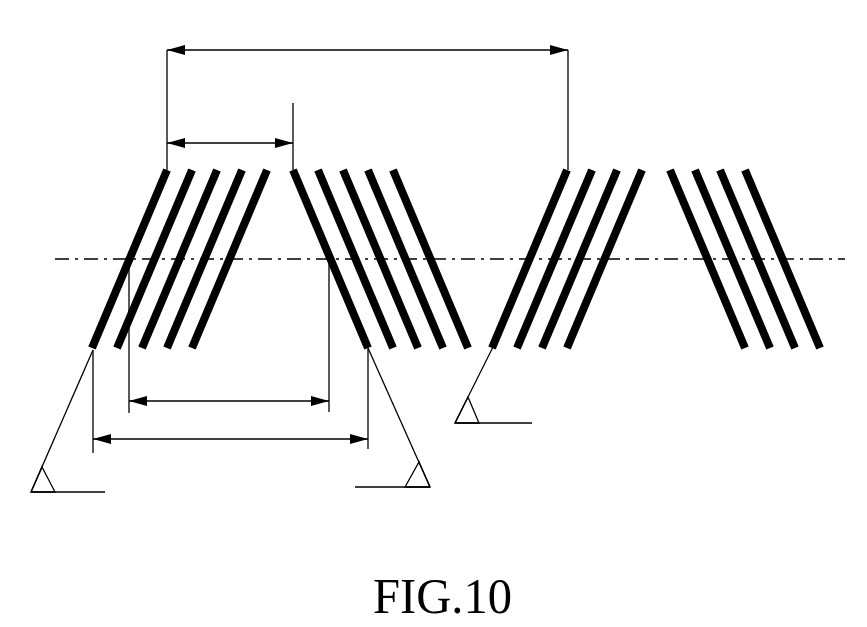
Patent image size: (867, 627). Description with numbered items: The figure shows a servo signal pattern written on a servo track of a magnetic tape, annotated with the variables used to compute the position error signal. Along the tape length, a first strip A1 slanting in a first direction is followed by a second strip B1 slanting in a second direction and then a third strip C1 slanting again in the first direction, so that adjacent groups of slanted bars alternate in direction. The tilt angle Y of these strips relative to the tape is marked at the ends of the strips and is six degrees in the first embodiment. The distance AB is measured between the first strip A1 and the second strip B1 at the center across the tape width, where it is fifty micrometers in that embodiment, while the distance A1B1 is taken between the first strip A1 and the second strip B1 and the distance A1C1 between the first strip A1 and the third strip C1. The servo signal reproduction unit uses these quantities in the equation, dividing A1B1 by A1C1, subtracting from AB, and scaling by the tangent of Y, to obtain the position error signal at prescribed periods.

The first strip A1 is at (163, 92).
The second strip B1 is at (288, 118).
The third strip C1 is at (566, 91).
The distance between the first strip and the third strip A1C1 is at (367, 34).
The distance between the first strip and the second strip A1B1 is at (230, 280).
The distance between the first strip and the second strip at the center across the t AB is at (229, 337).
The tilt angle of the strips Y is at (281, 419).